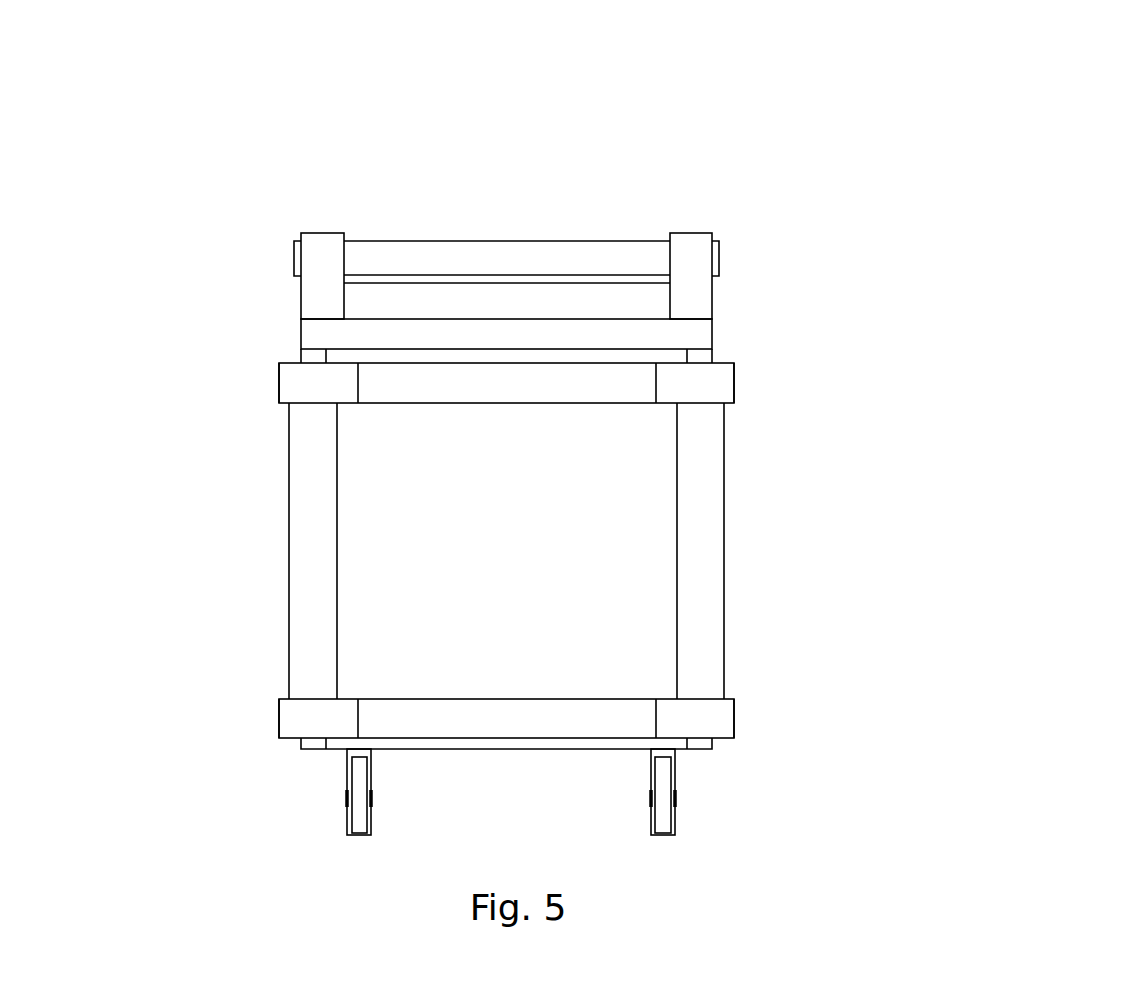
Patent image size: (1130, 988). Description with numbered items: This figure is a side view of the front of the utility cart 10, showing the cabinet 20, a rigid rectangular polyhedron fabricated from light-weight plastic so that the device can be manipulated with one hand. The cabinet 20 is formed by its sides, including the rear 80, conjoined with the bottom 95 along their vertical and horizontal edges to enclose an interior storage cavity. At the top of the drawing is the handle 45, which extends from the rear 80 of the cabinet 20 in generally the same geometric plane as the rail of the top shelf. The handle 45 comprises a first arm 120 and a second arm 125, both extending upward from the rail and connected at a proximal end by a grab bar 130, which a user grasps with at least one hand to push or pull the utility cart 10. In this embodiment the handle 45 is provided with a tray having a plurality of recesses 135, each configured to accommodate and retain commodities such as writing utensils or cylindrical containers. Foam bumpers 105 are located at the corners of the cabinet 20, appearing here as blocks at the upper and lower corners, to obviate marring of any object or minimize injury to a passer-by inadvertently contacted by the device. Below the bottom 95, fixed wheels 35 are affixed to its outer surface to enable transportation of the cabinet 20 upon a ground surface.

The utility cart 10 is at (1030, 65).
The cabinet 20 is at (745, 482).
The fixed wheels 35 is at (345, 803).
The handle 45 is at (535, 174).
The rear 80 is at (608, 540).
The bottom 95 is at (510, 750).
The foam bumpers 105 is at (735, 377).
The first arm 120 is at (691, 232).
The second arm 125 is at (316, 231).
The grab bar 130 is at (572, 239).
The recesses 135 is at (532, 297).